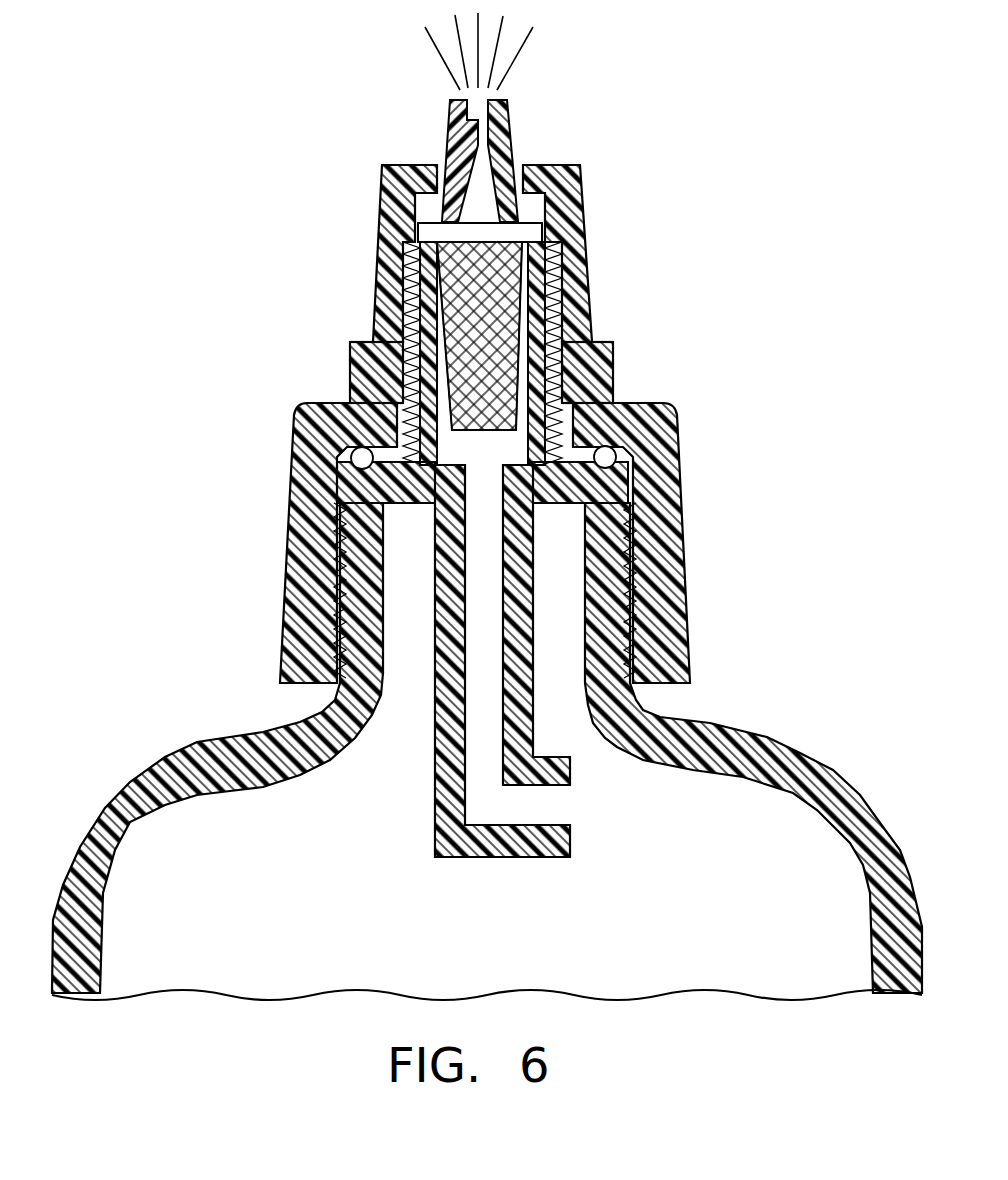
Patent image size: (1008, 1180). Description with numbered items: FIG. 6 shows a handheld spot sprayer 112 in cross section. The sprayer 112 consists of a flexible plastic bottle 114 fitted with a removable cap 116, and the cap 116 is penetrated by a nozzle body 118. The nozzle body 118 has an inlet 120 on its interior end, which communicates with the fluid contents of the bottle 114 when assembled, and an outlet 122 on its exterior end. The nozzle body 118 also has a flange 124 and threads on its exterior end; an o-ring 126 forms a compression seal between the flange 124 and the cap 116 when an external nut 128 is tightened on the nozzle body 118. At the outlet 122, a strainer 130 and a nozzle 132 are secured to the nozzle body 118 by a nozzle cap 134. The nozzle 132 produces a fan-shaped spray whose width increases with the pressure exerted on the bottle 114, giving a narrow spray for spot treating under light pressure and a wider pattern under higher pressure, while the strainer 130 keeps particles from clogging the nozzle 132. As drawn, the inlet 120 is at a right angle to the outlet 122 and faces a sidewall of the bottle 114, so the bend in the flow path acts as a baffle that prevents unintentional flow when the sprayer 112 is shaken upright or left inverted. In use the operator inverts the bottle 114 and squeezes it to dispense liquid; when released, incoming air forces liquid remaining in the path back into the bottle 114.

The handheld spot sprayer 112 is at (148, 440).
The flexible plastic bottle 114 is at (767, 735).
The removable cap 116 is at (679, 456).
The nozzle body 118 is at (553, 297).
The inlet 120 is at (573, 808).
The outlet 122 is at (478, 232).
The flange 124 is at (618, 486).
The o-ring 126 is at (624, 437).
The external nut 128 is at (350, 376).
The strainer 130 is at (425, 297).
The nozzle 132 is at (514, 118).
The nozzle cap 134 is at (581, 212).